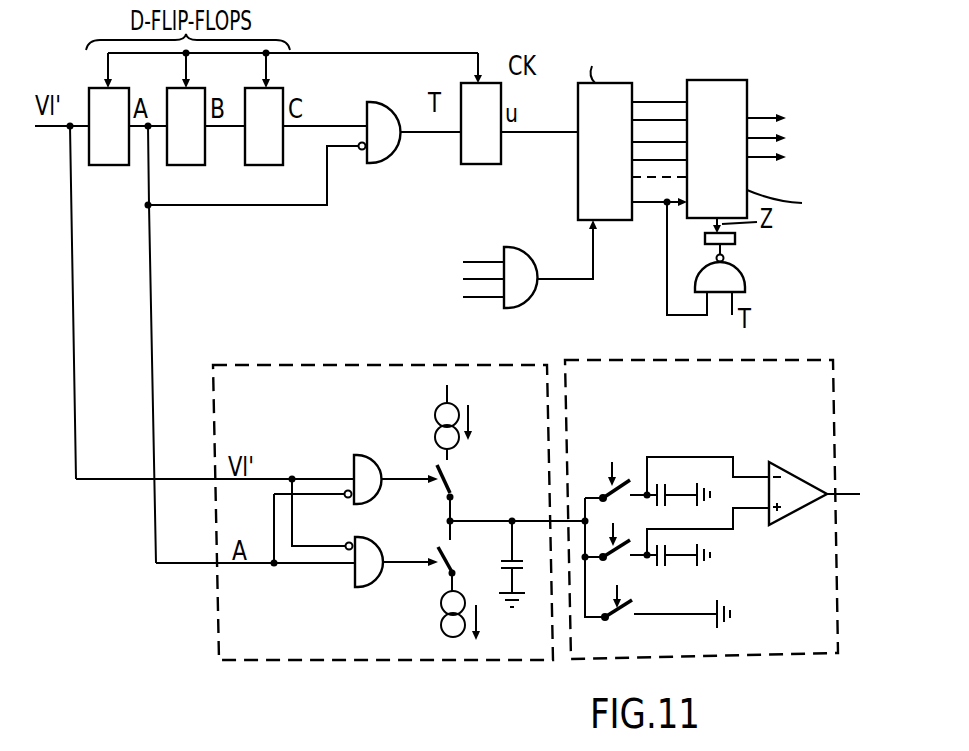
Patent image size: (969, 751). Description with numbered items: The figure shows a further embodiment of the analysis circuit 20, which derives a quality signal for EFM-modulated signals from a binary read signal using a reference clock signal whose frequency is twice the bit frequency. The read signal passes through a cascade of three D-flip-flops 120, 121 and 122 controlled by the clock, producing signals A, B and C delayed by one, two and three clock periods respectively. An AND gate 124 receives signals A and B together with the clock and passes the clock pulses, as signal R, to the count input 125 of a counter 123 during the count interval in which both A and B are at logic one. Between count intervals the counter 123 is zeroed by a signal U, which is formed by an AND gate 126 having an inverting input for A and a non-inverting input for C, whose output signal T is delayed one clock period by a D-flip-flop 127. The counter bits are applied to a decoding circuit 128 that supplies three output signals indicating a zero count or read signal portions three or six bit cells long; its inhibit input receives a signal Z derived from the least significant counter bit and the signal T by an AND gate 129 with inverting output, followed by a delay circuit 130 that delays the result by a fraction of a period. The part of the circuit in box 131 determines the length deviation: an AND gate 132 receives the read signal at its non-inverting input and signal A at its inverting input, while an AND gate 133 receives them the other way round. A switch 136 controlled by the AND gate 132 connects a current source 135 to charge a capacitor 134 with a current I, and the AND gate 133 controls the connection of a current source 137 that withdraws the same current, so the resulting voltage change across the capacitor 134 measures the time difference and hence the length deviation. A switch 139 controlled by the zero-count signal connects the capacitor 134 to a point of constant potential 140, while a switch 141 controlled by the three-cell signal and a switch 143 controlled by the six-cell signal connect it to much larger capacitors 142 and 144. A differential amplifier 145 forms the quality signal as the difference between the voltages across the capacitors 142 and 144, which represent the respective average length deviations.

The analysis circuit 20 is at (816, 64).
The D-flip-flop 120 is at (113, 165).
The D-flip-flop 121 is at (200, 165).
The D-flip-flop 122 is at (258, 165).
The counter 123 is at (618, 221).
The AND gate 124 is at (528, 303).
The count input 125 is at (703, 240).
The AND gate 126 is at (396, 160).
The D-flip-flop 127 is at (393, 228).
The decoding circuit 128 is at (717, 80).
The AND gate 129 is at (745, 280).
The delay circuit 130 is at (735, 240).
The box 131 is at (343, 664).
The AND gate 132 is at (368, 456).
The AND gate 133 is at (372, 587).
The capacitor 134 is at (465, 545).
The current source 135 is at (457, 403).
The switch 136 is at (453, 484).
The current source 137 is at (465, 636).
The switch 139 is at (623, 612).
The point of constant potential 140 is at (718, 626).
The switch 141 is at (621, 554).
The capacitor 142 is at (663, 567).
The switch 143 is at (603, 492).
The capacitor 144 is at (664, 485).
The differential amplifier 145 is at (789, 512).